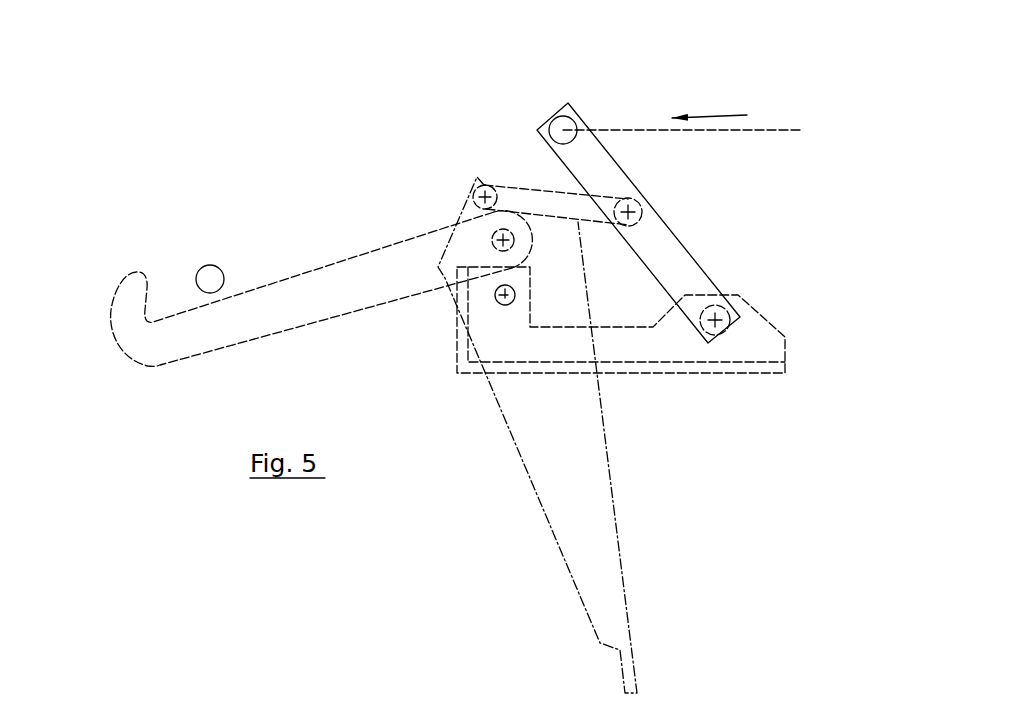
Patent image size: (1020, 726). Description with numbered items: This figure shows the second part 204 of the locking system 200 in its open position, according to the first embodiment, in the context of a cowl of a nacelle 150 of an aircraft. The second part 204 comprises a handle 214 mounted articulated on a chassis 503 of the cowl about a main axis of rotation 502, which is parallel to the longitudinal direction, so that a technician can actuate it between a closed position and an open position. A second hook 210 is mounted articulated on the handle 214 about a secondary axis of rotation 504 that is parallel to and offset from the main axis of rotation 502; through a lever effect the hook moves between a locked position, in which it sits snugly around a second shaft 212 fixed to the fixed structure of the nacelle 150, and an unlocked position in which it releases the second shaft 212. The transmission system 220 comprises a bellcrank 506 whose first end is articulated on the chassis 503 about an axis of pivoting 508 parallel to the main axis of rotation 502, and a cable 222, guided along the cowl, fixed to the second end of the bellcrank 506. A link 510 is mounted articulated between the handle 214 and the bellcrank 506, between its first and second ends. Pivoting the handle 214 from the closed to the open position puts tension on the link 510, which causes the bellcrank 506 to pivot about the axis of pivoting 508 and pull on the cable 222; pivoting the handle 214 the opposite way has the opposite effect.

The nacelle 150 is at (788, 87).
The locking system 200 is at (690, 83).
The second part 204 is at (245, 138).
The second hook 210 is at (132, 287).
The second shaft 212 is at (212, 280).
The handle 214 is at (622, 605).
The transmission system 220 is at (433, 108).
The cable 222 is at (768, 131).
The main axis of rotation 502 is at (505, 297).
The chassis 503 is at (760, 337).
The secondary axis of rotation 504 is at (493, 237).
The bellcrank 506 is at (667, 243).
The axis of pivoting 508 is at (716, 331).
The link 510 is at (530, 198).